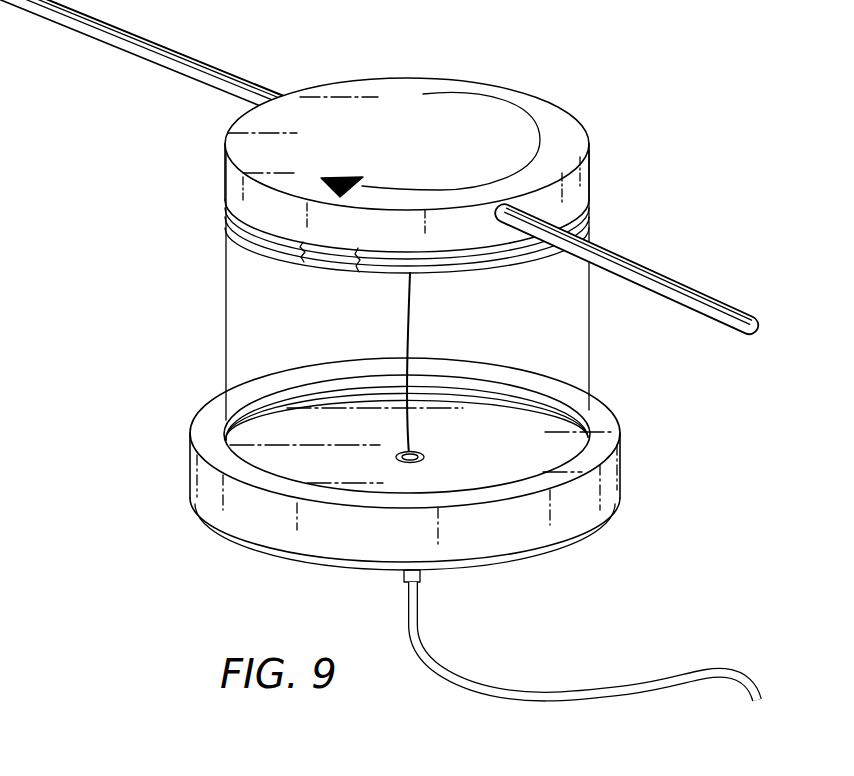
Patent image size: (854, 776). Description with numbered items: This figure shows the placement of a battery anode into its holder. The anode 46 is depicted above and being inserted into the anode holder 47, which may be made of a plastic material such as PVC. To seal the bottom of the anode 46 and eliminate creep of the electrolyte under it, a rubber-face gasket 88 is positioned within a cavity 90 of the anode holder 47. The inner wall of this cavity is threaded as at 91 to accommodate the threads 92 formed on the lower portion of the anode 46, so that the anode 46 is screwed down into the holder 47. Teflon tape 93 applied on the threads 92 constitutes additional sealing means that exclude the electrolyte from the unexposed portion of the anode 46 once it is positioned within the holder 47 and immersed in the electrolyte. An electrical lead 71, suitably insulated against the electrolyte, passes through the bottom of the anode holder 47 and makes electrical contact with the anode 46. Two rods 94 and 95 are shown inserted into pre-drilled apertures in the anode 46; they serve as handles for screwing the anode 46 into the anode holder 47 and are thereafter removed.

The anode 46 is at (502, 90).
The anode holder 47 is at (618, 467).
The electrical lead 71 is at (438, 657).
The rubber-face gasket 88 is at (538, 423).
The cavity 90 is at (462, 418).
The threaded inner wall 91 is at (283, 401).
The threads 92 is at (321, 258).
The Teflon tape 93 is at (272, 251).
The rod 94 is at (197, 67).
The rod 95 is at (662, 280).